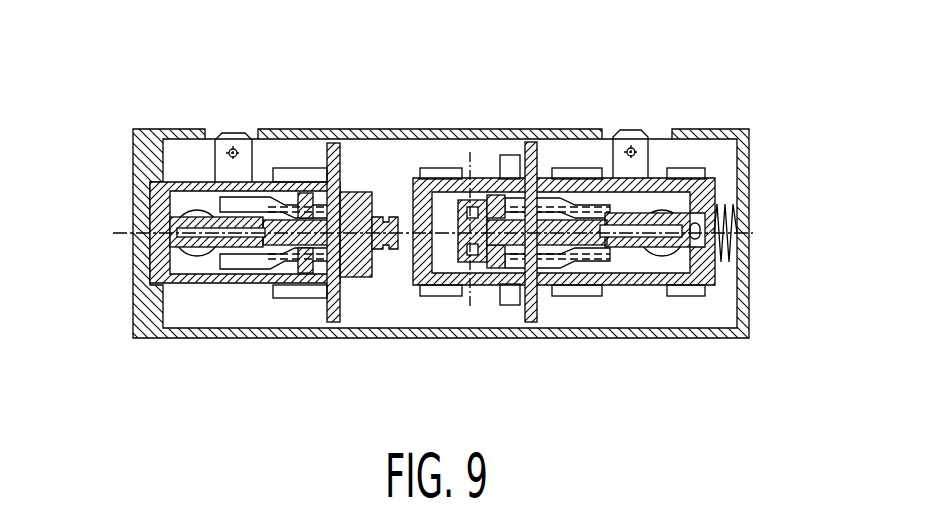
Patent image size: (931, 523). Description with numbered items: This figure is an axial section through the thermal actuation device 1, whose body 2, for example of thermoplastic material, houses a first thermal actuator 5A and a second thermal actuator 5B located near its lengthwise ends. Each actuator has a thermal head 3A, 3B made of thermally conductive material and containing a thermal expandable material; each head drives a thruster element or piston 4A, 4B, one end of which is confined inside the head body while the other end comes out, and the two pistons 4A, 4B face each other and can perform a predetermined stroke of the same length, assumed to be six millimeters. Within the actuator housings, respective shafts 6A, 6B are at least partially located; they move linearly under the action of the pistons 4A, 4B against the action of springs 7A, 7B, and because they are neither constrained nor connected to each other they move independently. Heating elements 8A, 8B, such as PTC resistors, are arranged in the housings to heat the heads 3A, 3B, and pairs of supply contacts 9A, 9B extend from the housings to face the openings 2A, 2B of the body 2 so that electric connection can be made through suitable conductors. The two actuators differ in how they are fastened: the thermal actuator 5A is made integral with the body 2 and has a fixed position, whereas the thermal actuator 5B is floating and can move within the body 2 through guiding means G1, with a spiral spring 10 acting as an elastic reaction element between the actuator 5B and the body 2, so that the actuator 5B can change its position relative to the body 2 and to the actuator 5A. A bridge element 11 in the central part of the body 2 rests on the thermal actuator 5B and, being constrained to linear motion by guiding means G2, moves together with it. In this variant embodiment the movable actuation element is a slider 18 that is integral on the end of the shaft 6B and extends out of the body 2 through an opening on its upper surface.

The device 1 is at (106, 281).
The body 2 is at (133, 337).
The opening 2A is at (255, 129).
The opening 2B is at (607, 129).
The thermal head 3A is at (172, 205).
The thermal head 3B is at (700, 188).
The piston 4A is at (222, 252).
The piston 4B is at (600, 250).
The first thermal actuator 5A is at (178, 175).
The second thermal actuator 5B is at (728, 179).
The shaft 6A is at (381, 250).
The shaft 6B is at (560, 320).
The spring 7A is at (323, 140).
The spring 7B is at (552, 137).
The heating element 8A is at (198, 208).
The heating element 8B is at (676, 200).
The supply terminals 9A is at (228, 134).
The supply terminals 9B is at (640, 137).
The spiral spring 10 is at (736, 203).
The bridge element 11 is at (407, 139).
The slider 18 is at (482, 138).
The guiding means G1 is at (509, 140).
The guiding means G2 is at (442, 168).